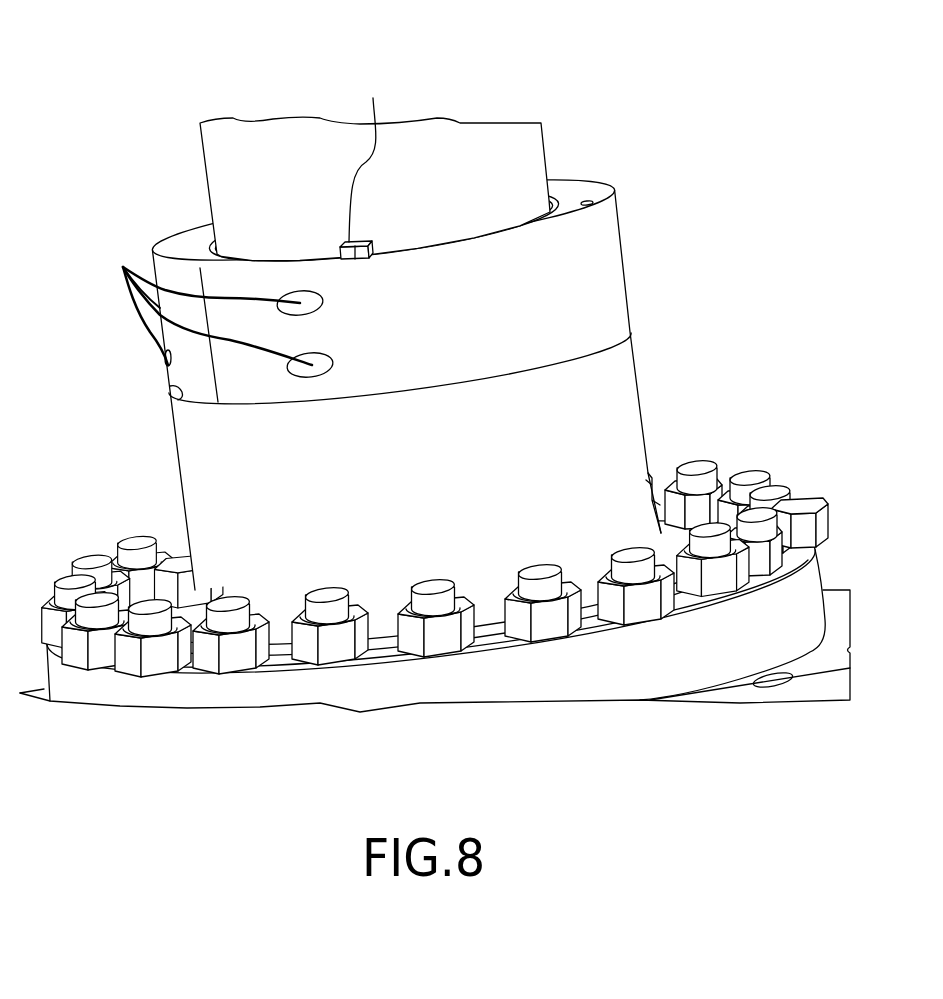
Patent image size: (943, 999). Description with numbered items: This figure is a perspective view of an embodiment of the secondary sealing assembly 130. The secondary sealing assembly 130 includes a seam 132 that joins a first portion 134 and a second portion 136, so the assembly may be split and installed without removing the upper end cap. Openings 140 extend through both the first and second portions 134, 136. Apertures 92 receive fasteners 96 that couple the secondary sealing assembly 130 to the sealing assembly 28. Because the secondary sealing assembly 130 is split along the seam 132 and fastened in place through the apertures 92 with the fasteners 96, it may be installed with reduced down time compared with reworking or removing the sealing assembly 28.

The sealing assembly 28 is at (698, 437).
The apertures 92 is at (380, 266).
The fasteners 96 is at (373, 98).
The secondary sealing assembly 130 is at (674, 128).
The seam 132 is at (184, 396).
The first portion 134 is at (634, 281).
The second portion 136 is at (150, 216).
The openings 140 is at (124, 263).